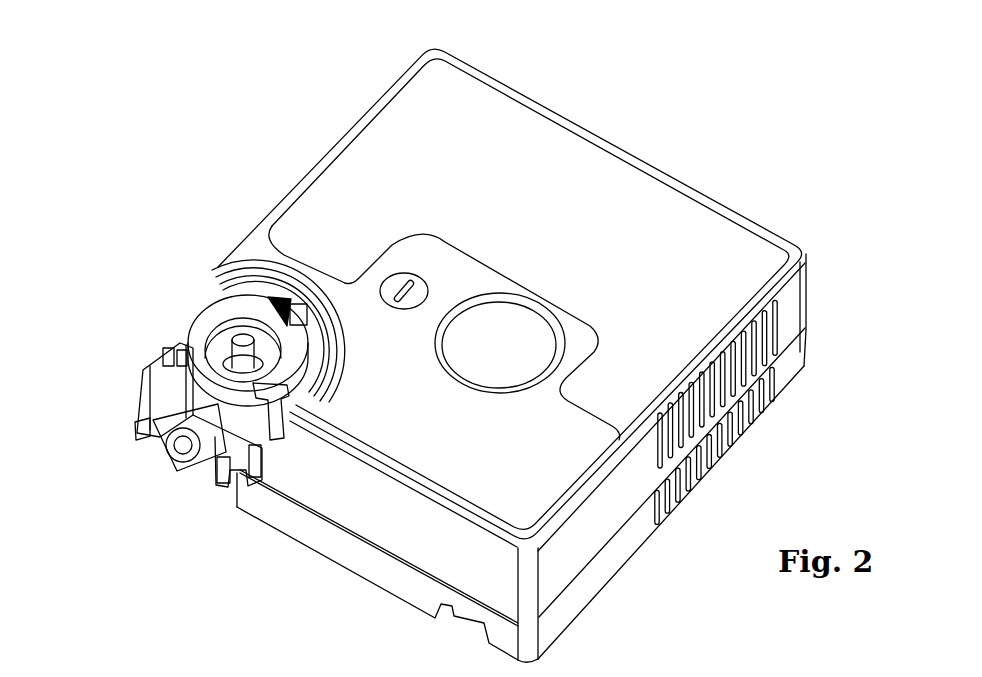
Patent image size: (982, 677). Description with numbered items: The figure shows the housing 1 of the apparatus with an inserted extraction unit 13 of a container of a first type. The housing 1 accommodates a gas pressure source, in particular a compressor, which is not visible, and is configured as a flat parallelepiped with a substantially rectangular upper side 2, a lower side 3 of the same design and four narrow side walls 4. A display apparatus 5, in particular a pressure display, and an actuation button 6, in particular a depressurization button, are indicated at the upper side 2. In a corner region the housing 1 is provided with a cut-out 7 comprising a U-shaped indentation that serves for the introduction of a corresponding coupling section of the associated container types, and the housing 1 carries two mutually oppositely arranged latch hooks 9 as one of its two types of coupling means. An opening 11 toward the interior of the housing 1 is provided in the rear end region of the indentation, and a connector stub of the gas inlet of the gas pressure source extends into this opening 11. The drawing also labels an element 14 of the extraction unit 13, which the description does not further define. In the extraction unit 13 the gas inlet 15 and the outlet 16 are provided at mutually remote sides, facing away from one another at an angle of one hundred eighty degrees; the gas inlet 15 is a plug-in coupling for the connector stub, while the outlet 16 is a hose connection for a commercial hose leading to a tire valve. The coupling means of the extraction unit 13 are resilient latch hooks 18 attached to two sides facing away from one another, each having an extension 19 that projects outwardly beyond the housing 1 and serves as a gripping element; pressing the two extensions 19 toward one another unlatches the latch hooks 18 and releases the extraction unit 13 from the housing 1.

The housing 1 is at (386, 191).
The upper side 2 is at (532, 200).
The lower side 3 is at (604, 580).
The narrow side walls 4 is at (385, 89).
The display apparatus 5 is at (530, 343).
The actuation button 6 is at (420, 292).
The cut-out 7 is at (343, 380).
The latch hooks 9 is at (177, 355).
The opening 11 is at (294, 304).
The extraction unit 13 is at (223, 397).
The cylindrical socket 14 is at (223, 340).
The gas inlet 15 is at (287, 306).
The outlet 16 is at (167, 430).
The resilient latch hooks 18 is at (175, 392).
The extensions 19 is at (142, 427).